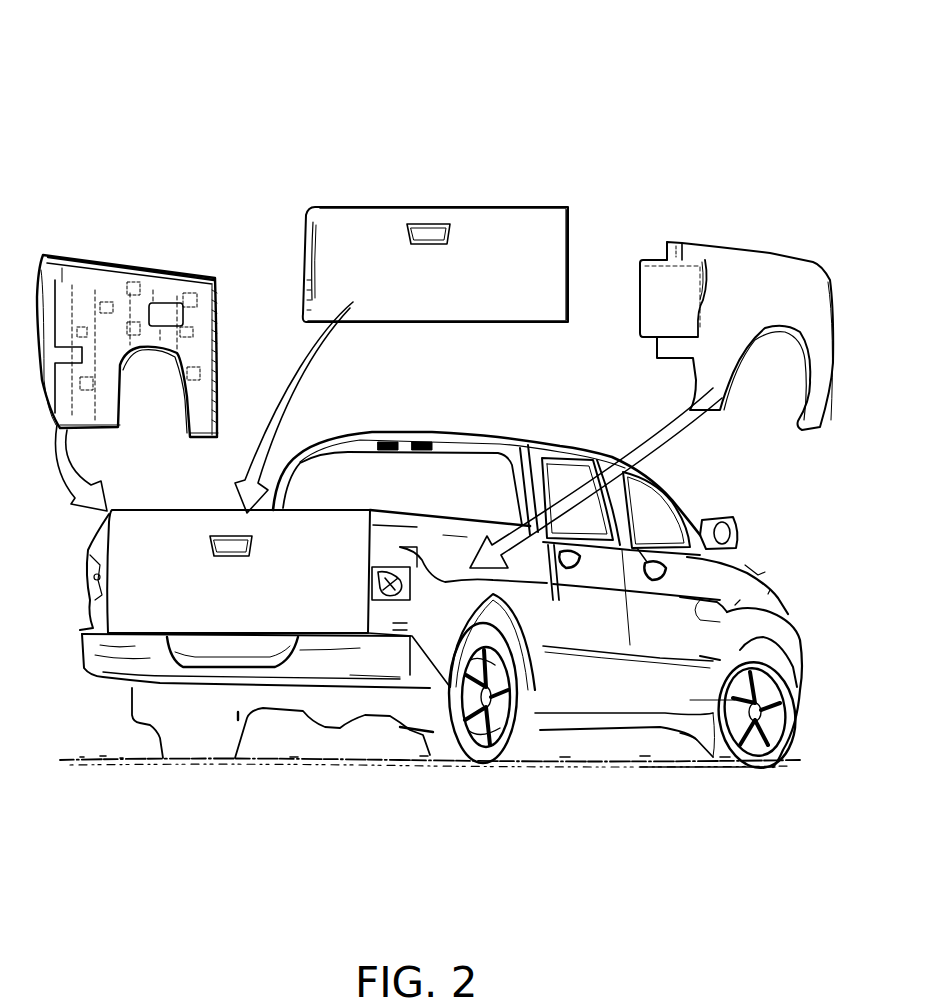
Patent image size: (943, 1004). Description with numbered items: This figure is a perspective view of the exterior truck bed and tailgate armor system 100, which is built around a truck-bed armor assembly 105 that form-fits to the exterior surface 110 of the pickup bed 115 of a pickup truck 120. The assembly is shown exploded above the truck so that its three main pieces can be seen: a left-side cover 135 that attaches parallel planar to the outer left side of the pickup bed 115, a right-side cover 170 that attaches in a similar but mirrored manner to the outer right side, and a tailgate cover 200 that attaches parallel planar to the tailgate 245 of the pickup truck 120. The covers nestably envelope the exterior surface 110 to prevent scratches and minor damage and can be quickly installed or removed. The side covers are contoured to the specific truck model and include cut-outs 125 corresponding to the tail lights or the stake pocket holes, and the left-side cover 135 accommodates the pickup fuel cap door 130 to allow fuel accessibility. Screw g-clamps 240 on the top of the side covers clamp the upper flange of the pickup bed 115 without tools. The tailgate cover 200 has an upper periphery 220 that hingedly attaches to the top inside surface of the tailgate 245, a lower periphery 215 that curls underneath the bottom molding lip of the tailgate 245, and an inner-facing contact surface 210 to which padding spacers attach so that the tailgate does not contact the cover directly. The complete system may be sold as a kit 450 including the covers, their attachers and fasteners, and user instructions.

The exterior truck bed and tailgate armor system 100 is at (441, 395).
The truck-bed armor assembly 105 is at (713, 102).
The kit 450 is at (730, 147).
The exterior surface 110 is at (445, 537).
The pickup bed 115 is at (397, 514).
The pickup truck 120 is at (470, 437).
The cut-outs 125 is at (73, 304).
The pickup fuel cap door 130 is at (184, 316).
The left-side cover 135 is at (140, 313).
The right-side cover 170 is at (720, 246).
The tailgate cover 200 is at (446, 207).
The inner-facing contact surface 210 is at (535, 275).
The lower periphery 215 is at (430, 324).
The upper periphery 220 is at (480, 207).
The screw g-clamps 240 is at (96, 258).
The tailgate 245 is at (242, 601).